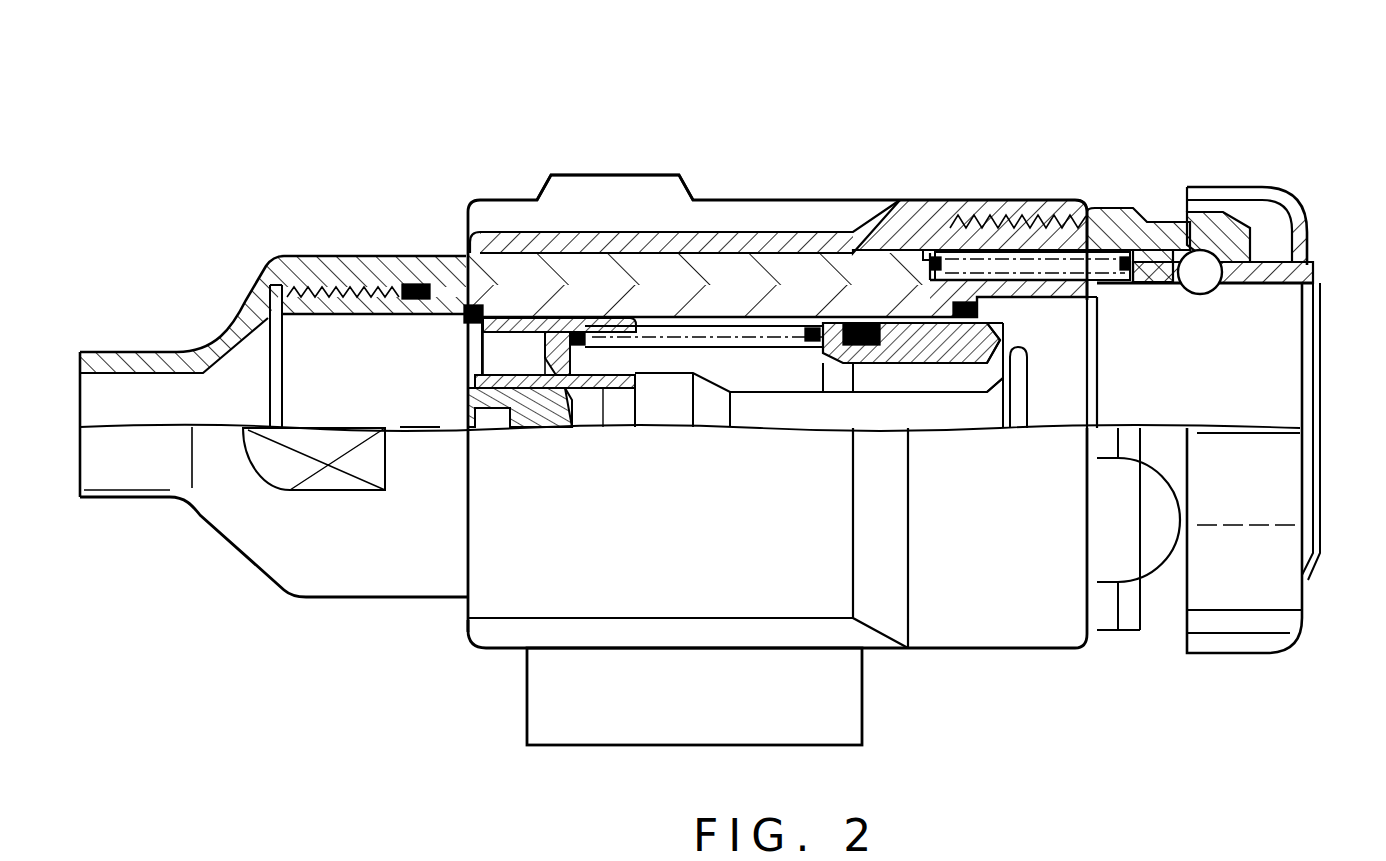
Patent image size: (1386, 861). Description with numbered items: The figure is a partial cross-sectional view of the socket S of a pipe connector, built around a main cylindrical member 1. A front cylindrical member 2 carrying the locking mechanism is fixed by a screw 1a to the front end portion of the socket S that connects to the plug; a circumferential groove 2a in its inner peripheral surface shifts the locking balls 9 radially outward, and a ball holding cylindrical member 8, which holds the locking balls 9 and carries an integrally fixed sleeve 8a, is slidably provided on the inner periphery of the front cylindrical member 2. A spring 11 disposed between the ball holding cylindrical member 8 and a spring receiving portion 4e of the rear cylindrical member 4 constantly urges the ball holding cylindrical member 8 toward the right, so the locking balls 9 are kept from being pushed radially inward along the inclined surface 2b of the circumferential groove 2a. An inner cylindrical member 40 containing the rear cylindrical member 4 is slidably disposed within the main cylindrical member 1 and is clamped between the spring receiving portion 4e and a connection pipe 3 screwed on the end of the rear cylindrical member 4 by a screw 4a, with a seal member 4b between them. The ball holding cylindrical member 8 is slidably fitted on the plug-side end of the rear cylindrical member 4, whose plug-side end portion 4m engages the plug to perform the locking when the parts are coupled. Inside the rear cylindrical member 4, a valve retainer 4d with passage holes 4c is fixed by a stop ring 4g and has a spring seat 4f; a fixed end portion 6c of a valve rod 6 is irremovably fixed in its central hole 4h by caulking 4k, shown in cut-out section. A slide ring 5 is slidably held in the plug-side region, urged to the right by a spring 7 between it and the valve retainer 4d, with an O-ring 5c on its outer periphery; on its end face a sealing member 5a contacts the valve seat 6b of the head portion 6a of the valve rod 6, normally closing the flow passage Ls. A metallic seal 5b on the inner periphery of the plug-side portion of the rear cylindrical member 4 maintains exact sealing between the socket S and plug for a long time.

The socket S is at (505, 100).
The main cylindrical member 1 is at (780, 245).
The screw 1a is at (998, 215).
The front cylindrical member 2 is at (1100, 222).
The circumferential groove 2a is at (1158, 258).
The inclined surface 2b is at (1207, 213).
The connection pipe 3 is at (225, 315).
The rear cylindrical member 4 is at (500, 300).
The screw 4a is at (326, 285).
The seal member 4b is at (413, 284).
The passage holes 4c is at (566, 353).
The valve retainer 4d is at (580, 422).
The spring receiving portion 4e is at (906, 268).
The spring seat 4f is at (542, 340).
The stop ring 4g is at (466, 318).
The central hole 4h is at (633, 420).
The caulking 4k is at (487, 425).
The plug-side end portion 4m is at (1092, 312).
The inner cylindrical member 40 is at (722, 258).
The slide ring 5 is at (885, 372).
The sealing member 5a is at (1005, 345).
The metallic seal 5b is at (990, 312).
The O-ring 5c is at (858, 338).
The valve rod 6 is at (927, 415).
The head portion 6a is at (1016, 412).
The valve seat 6b is at (990, 420).
The fixed end portion 6c is at (605, 420).
The spring 7 is at (735, 336).
The ball holding cylindrical member 8 is at (1270, 282).
The sleeve 8a is at (1296, 503).
The locking balls 9 is at (1212, 287).
The spring 11 is at (1046, 262).
The flow passage Ls is at (418, 418).